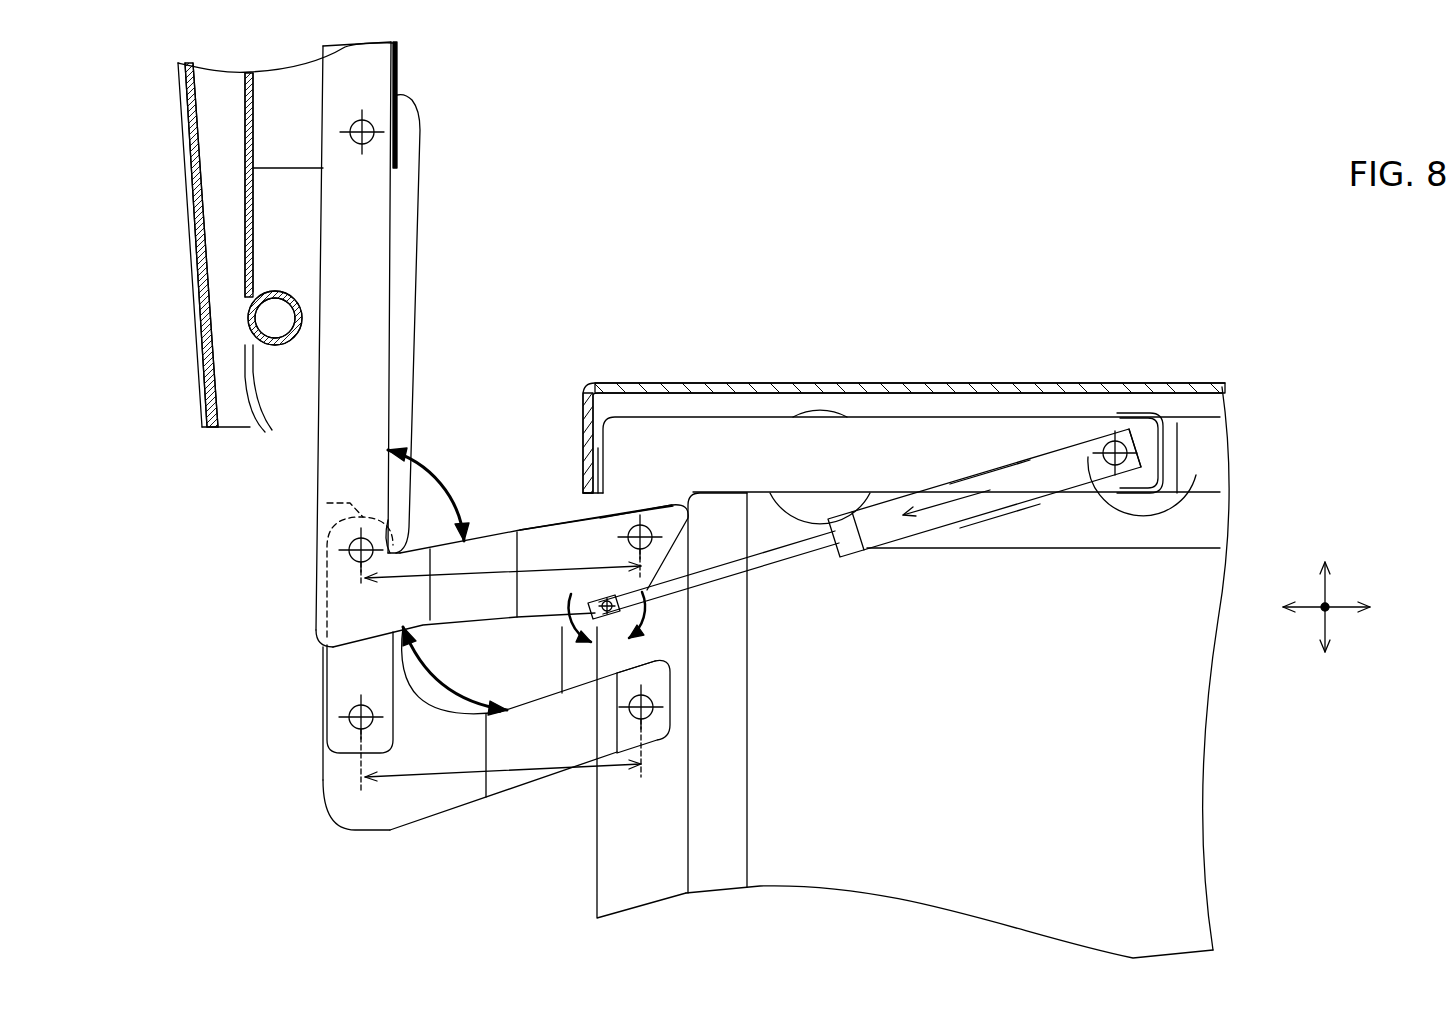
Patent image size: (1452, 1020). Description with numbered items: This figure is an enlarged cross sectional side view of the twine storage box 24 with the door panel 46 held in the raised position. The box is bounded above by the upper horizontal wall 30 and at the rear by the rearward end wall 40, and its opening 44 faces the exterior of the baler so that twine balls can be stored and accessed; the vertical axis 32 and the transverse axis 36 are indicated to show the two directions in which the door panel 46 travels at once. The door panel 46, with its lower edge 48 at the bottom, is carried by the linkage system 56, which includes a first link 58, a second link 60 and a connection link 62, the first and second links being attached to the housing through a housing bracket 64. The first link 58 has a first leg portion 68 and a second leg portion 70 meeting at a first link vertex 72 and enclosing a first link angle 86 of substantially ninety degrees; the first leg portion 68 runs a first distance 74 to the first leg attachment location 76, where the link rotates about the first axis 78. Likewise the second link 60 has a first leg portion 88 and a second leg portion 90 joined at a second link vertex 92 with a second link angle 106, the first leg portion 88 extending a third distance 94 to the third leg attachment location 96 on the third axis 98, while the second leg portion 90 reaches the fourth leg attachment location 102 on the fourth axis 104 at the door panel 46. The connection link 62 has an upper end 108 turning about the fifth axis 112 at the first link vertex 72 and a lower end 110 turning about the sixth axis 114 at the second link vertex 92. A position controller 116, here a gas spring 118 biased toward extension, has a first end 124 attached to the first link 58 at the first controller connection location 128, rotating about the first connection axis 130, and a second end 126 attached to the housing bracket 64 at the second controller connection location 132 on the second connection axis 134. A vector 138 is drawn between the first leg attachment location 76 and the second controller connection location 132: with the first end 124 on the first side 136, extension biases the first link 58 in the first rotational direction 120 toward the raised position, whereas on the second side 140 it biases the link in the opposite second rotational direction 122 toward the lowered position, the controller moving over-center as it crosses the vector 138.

The twine storage box 24 is at (893, 188).
The upper horizontal wall 30 is at (1163, 387).
The vertical axis 32 is at (1336, 583).
The transverse axis 36 is at (1340, 615).
The rearward end wall 40 is at (1102, 752).
The opening 44 is at (600, 830).
The door panel 46 is at (190, 213).
The lower edge 48 is at (236, 432).
The linkage system 56 is at (306, 730).
The first link 58 is at (350, 351).
The second link 60 is at (390, 800).
The connection link 62 is at (353, 673).
The housing bracket 64 is at (787, 463).
The first leg portion 68 is at (488, 560).
The second leg portion 70 is at (357, 260).
The first link vertex 72 is at (350, 588).
The first distance 74 is at (510, 568).
The first leg attachment location 76 is at (622, 507).
The first axis 78 is at (658, 508).
The first link angle 86 is at (440, 478).
The first leg portion 88 is at (537, 742).
The second leg portion 90 is at (403, 300).
The second link vertex 92 is at (352, 735).
The third distance 94 is at (443, 773).
The third leg attachment location 96 is at (653, 703).
The third axis 98 is at (672, 710).
The fourth leg attachment location 102 is at (375, 128).
The fourth axis 104 is at (358, 122).
The second link angle 106 is at (473, 655).
The upper end 108 is at (317, 497).
The lower end 110 is at (325, 786).
The fifth axis 112 is at (350, 557).
The sixth axis 114 is at (356, 702).
The position controller 116 is at (898, 547).
The gas spring 118 is at (857, 527).
The first rotational direction 120 is at (652, 618).
The second rotational direction 122 is at (567, 613).
The first end 124 is at (743, 563).
The second end 126 is at (1013, 477).
The first controller connection location 128 is at (617, 546).
The first connection axis 130 is at (603, 598).
The second controller connection location 132 is at (1127, 427).
The second connection axis 134 is at (1107, 447).
The first side 136 is at (937, 493).
The vector 138 is at (987, 503).
The second side 140 is at (950, 513).